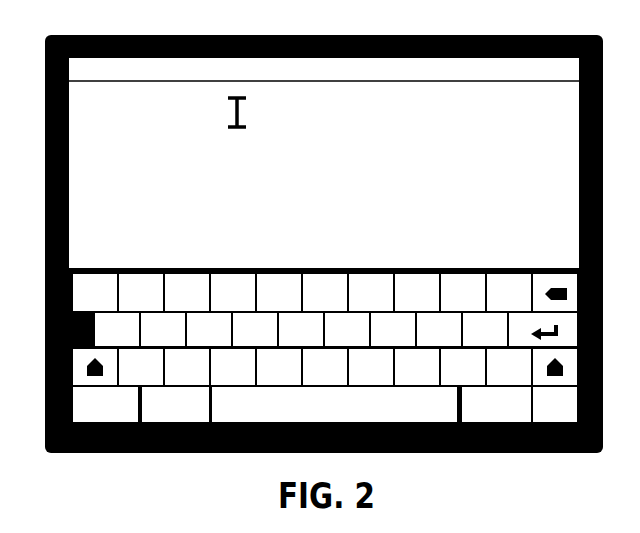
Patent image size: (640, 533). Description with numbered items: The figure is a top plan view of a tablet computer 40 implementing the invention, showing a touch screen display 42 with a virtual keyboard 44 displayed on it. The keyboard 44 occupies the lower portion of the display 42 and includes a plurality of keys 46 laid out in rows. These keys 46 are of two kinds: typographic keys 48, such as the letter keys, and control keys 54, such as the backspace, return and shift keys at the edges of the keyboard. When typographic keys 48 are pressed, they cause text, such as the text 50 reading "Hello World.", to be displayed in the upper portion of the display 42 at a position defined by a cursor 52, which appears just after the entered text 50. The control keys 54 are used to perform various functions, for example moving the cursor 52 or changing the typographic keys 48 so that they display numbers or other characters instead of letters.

The tablet computer 40 is at (44, 63).
The touch screen display 42 is at (565, 116).
The virtual keyboard 44 is at (132, 268).
The keys 46 is at (200, 275).
The typographic keys 48 is at (335, 270).
The text 50 is at (152, 107).
The cursor 52 is at (228, 128).
The control keys 54 is at (538, 270).